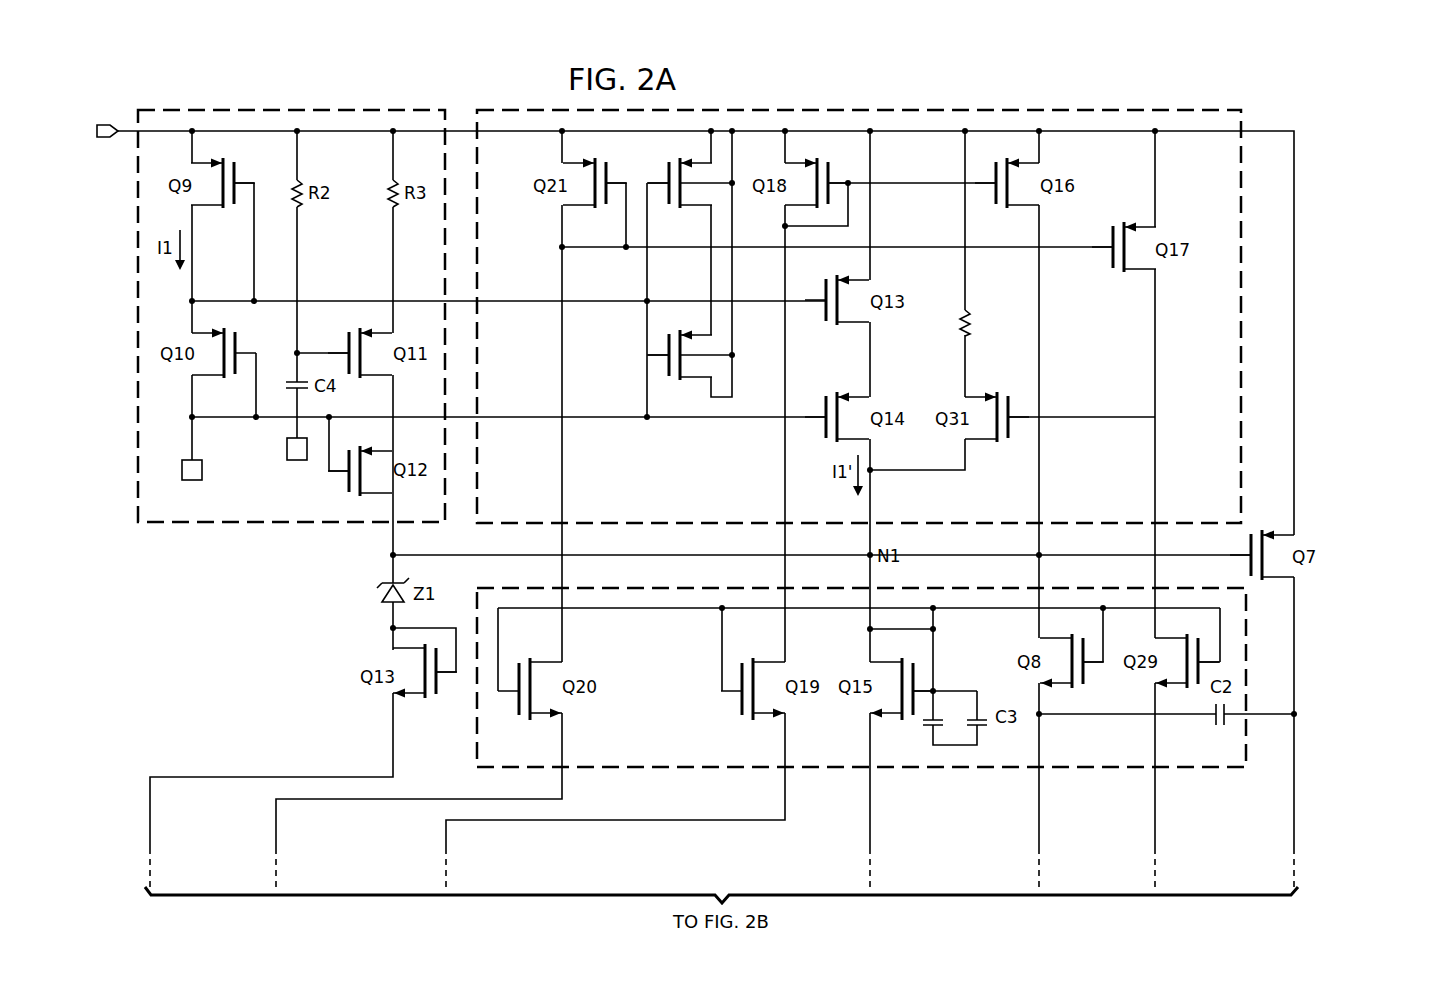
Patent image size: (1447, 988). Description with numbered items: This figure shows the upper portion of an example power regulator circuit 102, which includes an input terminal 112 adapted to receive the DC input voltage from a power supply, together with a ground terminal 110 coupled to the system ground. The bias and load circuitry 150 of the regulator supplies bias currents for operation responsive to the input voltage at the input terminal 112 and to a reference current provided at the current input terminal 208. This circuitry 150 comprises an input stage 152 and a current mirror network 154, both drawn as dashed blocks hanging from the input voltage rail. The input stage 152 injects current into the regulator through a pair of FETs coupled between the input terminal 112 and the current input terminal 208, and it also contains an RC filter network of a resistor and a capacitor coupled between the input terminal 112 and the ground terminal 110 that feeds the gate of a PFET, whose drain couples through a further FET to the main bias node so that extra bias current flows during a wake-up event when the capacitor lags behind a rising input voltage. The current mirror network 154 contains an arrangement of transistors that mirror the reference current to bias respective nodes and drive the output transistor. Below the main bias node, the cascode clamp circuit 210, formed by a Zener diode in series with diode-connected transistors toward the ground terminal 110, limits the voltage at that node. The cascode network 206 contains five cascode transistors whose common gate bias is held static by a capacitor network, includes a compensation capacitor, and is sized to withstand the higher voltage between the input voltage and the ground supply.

The power regulator circuit 102 is at (1352, 167).
The input terminal 112 is at (100, 123).
The input stage 152 is at (240, 110).
The current mirror network 154 is at (932, 110).
The cascode network 206 is at (960, 768).
The ground terminal 110 is at (286, 448).
The current input terminal 208 is at (203, 473).
The bias and load circuitry 150 is at (371, 556).
The cascode clamp circuit 210 is at (371, 628).